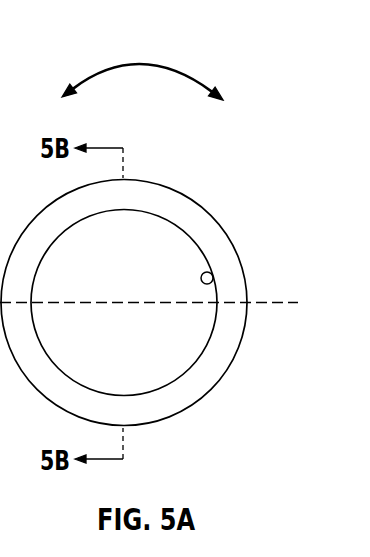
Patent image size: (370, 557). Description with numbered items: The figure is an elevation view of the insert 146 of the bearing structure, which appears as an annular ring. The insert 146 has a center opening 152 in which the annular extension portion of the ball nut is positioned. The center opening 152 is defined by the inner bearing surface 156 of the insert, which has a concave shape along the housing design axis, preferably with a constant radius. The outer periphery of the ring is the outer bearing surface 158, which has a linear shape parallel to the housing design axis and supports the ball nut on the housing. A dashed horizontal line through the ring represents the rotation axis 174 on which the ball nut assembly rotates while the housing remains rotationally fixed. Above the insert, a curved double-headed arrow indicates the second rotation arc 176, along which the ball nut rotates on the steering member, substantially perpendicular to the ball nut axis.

The insert 146 is at (148, 284).
The center opening 152 is at (148, 245).
The inner bearing surface 156 is at (215, 282).
The outer bearing surface 158 is at (208, 214).
The rotation axis 174 is at (275, 301).
The second rotation arc 176 is at (138, 67).